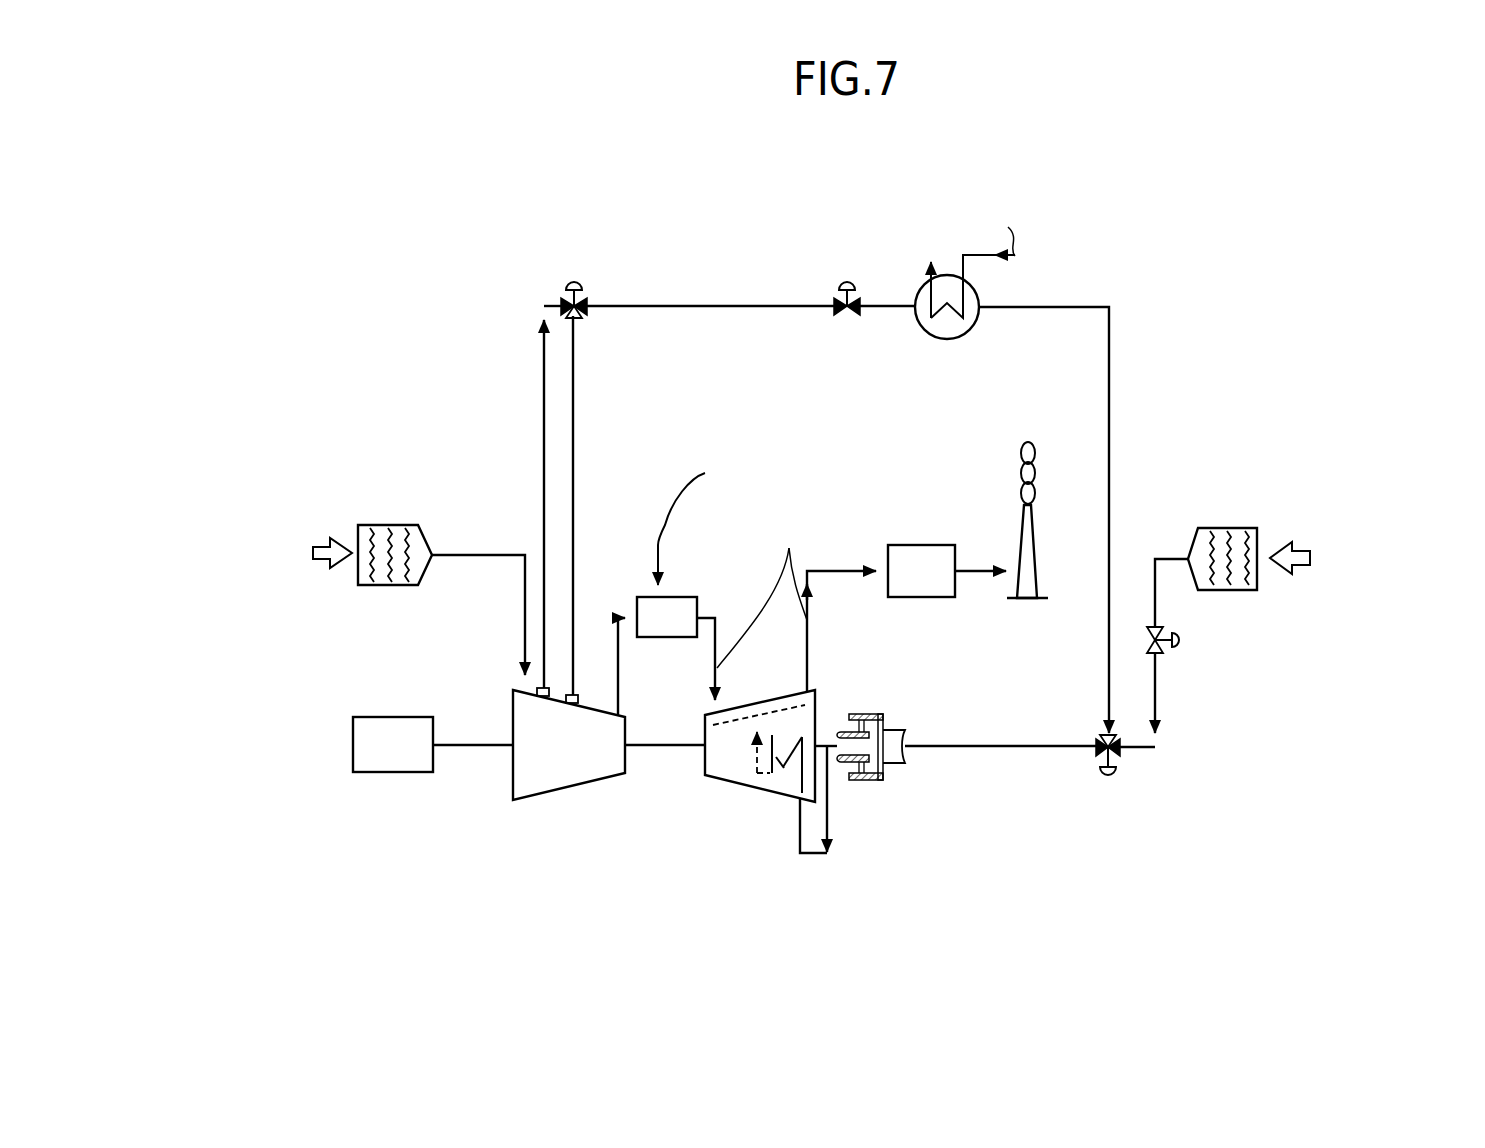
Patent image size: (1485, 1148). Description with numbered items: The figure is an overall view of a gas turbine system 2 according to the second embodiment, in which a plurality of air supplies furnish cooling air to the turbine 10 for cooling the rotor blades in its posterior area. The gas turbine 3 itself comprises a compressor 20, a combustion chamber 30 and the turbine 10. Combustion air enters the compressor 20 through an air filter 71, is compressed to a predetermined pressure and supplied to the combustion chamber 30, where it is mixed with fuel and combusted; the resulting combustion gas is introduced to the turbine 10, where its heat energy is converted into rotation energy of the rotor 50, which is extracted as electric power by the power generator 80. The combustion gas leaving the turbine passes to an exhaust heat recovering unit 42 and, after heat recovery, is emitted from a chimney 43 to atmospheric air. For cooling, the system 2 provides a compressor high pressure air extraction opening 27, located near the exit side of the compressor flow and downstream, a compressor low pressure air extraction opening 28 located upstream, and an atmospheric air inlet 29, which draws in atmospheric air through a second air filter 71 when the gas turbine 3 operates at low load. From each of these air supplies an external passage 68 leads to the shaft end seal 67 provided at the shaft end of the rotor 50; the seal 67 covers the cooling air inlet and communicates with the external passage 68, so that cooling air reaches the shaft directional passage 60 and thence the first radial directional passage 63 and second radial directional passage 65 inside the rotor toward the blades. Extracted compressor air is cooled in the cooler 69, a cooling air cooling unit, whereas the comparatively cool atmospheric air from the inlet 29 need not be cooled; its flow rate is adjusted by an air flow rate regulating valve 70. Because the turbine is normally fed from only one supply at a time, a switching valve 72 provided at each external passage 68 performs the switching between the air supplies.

The gas turbine system 2 is at (1242, 201).
The gas turbine 3 is at (657, 784).
The turbine 10 is at (735, 783).
The compressor 20 is at (513, 700).
The compressor high pressure air extraction opening 27 is at (580, 702).
The compressor low pressure air extraction opening 28 is at (538, 688).
The atmospheric air inlet 29 is at (1275, 595).
The combustion chamber 30 is at (681, 597).
The exhaust heat recovering unit 42 is at (924, 545).
The chimney 43 is at (1037, 555).
The rotor 50 is at (845, 728).
The shaft directional passage 60 is at (815, 853).
The first radial directional passage 63 is at (759, 821).
The second radial directional passage 65 is at (790, 758).
The shaft end seal 67 is at (871, 748).
The external passage 68 is at (1110, 368).
The cooler 69 is at (972, 330).
The air flow rate regulating valve 70 is at (850, 316).
The air filter 71 is at (388, 524).
The switching valve 72 is at (574, 282).
The power generator 80 is at (383, 773).